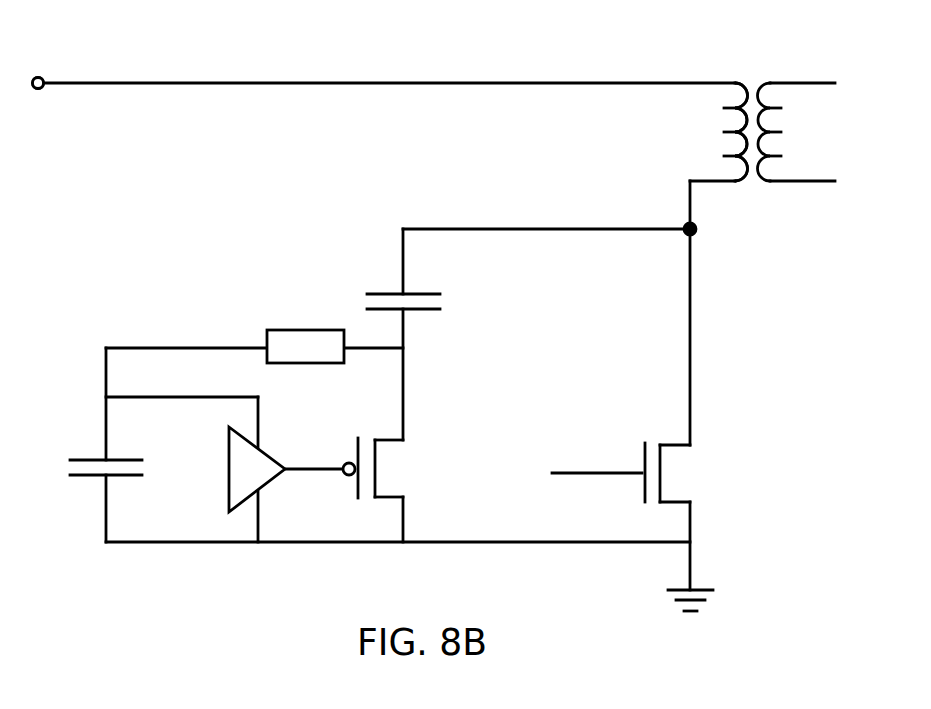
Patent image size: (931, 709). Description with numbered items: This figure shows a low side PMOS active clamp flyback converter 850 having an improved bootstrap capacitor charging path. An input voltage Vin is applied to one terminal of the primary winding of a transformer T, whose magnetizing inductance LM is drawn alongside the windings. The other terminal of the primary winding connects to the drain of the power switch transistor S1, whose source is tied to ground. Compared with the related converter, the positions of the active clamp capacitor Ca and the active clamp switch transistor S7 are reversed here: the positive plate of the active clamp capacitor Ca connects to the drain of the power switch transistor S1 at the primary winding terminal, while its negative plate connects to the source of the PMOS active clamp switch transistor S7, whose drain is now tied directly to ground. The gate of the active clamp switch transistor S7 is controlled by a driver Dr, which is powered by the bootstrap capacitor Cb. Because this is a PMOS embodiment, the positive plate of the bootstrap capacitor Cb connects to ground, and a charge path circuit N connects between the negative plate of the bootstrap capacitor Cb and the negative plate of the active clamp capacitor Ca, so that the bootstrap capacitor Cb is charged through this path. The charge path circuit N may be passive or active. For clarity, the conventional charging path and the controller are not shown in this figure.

The flyback converter 850 is at (438, 45).
The input voltage Vin is at (72, 62).
The transformer T is at (779, 114).
The magnetizing inductance LM is at (700, 132).
The active clamp capacitor Ca is at (425, 301).
The bootstrap capacitor Cb is at (128, 472).
The charge path circuit N is at (305, 346).
The driver Dr is at (286, 474).
The active clamp switch transistor S7 is at (385, 468).
The power switch transistor S1 is at (644, 472).